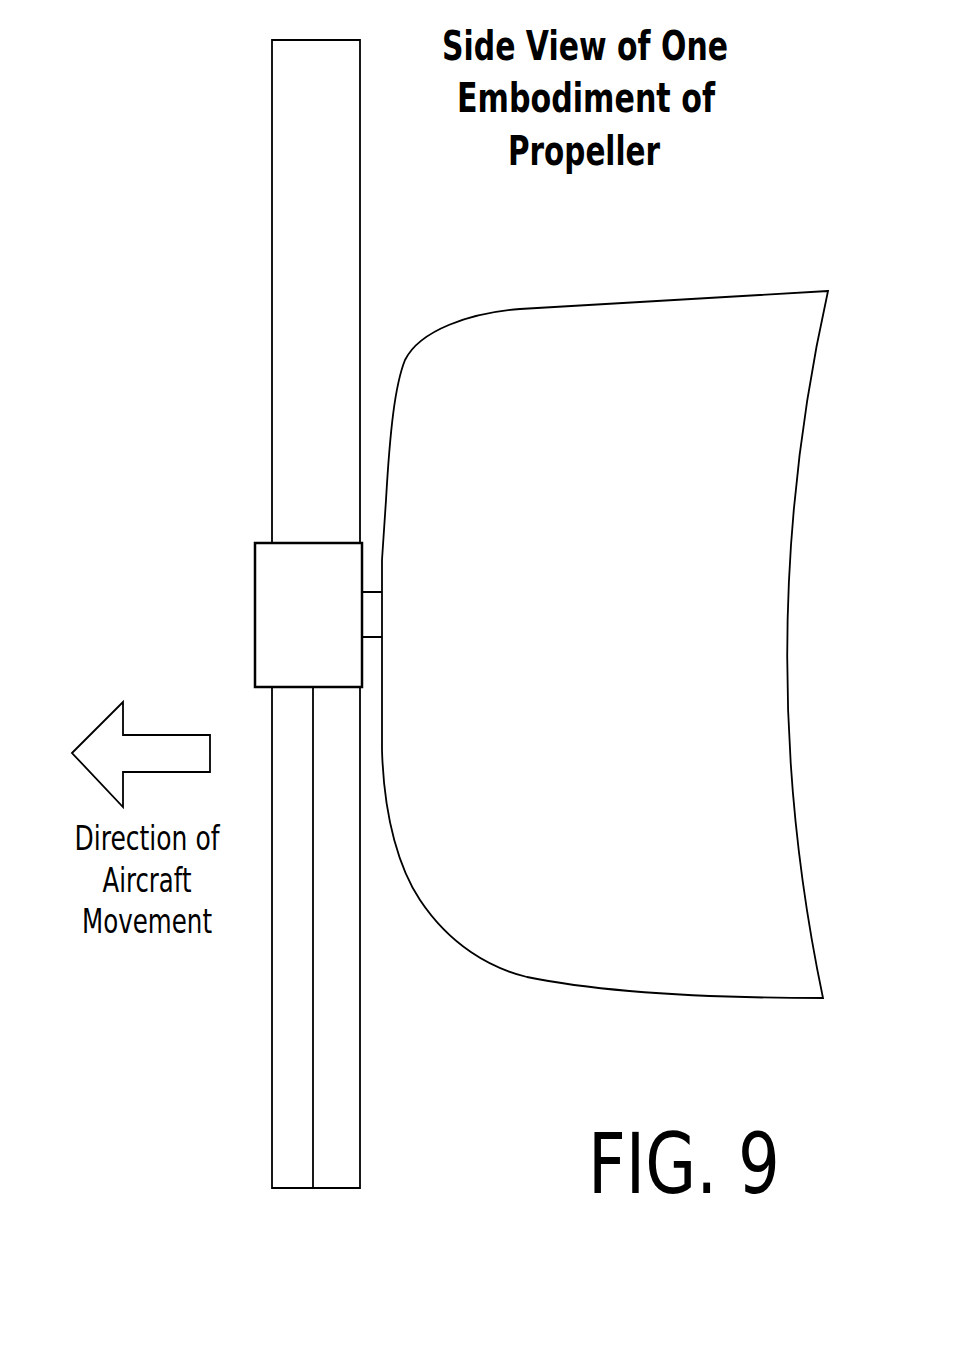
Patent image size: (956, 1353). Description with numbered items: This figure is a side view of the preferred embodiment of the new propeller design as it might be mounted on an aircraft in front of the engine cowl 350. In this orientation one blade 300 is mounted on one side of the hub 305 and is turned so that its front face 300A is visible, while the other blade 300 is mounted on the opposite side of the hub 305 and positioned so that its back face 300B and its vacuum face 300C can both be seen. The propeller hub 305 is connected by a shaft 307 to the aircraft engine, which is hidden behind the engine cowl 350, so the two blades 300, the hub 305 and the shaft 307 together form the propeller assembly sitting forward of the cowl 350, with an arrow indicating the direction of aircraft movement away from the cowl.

The blade 300 is at (294, 626).
The front face 300A is at (285, 262).
The back face 300B is at (340, 1100).
The vacuum face 300C is at (282, 1018).
The hub 305 is at (277, 615).
The shaft 307 is at (368, 618).
The engine cowl 350 is at (633, 368).